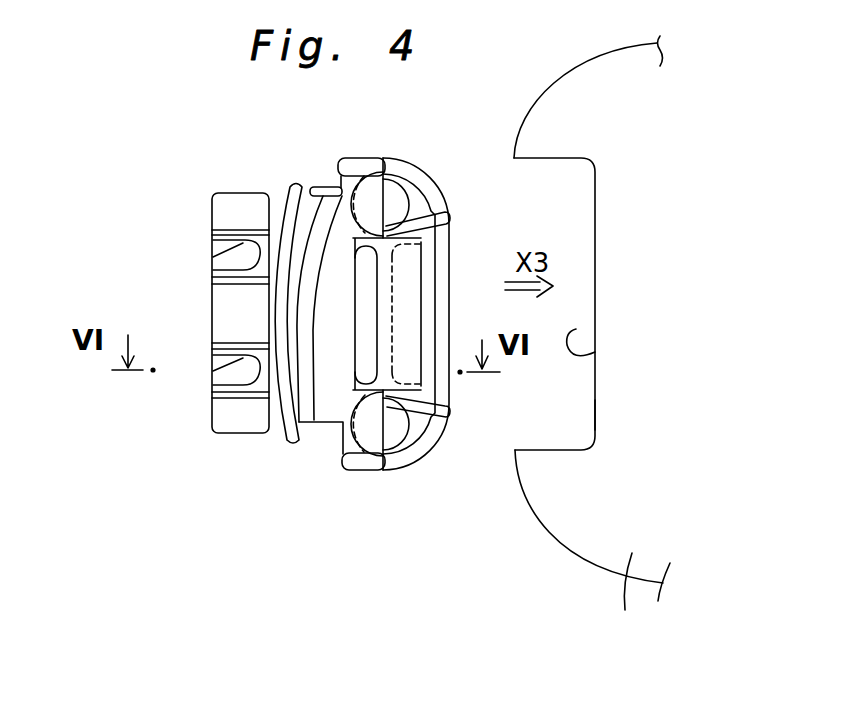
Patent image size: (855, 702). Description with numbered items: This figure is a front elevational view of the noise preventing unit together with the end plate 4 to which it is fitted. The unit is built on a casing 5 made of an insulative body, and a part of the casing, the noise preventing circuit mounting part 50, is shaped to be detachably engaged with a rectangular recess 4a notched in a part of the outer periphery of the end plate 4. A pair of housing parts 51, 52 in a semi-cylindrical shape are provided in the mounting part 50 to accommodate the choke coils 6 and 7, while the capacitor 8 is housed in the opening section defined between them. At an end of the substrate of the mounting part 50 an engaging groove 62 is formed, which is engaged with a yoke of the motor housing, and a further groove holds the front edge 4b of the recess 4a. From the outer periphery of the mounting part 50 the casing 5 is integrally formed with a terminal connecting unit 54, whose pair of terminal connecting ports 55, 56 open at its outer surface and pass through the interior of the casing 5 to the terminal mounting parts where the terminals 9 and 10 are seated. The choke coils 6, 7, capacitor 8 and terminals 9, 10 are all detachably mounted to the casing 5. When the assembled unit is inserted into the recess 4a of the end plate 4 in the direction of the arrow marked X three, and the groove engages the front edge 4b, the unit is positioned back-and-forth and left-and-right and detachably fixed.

The end plate 4 is at (592, 341).
The rectangular recess 4a is at (595, 353).
The front edge 4b is at (598, 415).
The casing 5 is at (330, 192).
The choke coil 6 is at (420, 184).
The choke coil 7 is at (433, 453).
The capacitor 8 is at (407, 272).
The terminal 9 is at (214, 235).
The terminal 10 is at (218, 380).
The noise preventing circuit mounting part 50 is at (399, 149).
The housing part 51 is at (388, 197).
The housing part 52 is at (393, 428).
The terminal connecting unit 54 is at (263, 435).
The terminal connecting port 55 is at (215, 267).
The terminal connecting port 56 is at (213, 357).
The engaging groove 62 is at (313, 192).